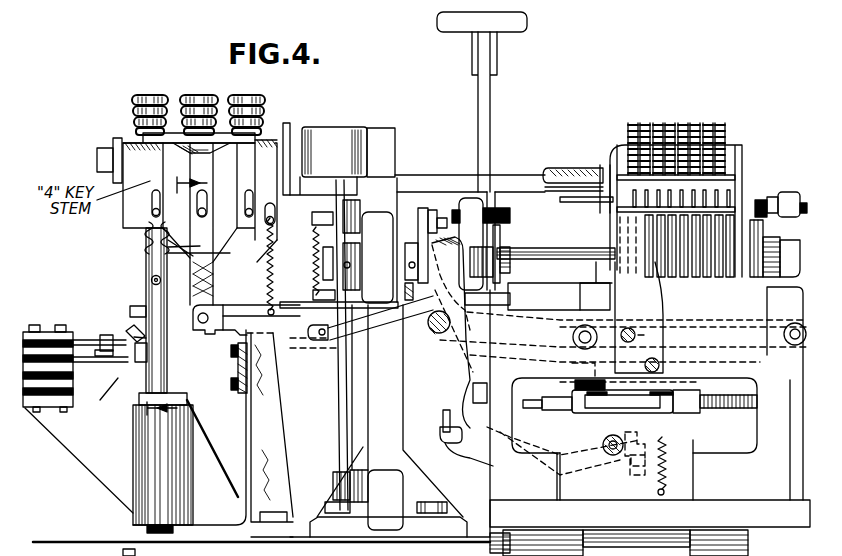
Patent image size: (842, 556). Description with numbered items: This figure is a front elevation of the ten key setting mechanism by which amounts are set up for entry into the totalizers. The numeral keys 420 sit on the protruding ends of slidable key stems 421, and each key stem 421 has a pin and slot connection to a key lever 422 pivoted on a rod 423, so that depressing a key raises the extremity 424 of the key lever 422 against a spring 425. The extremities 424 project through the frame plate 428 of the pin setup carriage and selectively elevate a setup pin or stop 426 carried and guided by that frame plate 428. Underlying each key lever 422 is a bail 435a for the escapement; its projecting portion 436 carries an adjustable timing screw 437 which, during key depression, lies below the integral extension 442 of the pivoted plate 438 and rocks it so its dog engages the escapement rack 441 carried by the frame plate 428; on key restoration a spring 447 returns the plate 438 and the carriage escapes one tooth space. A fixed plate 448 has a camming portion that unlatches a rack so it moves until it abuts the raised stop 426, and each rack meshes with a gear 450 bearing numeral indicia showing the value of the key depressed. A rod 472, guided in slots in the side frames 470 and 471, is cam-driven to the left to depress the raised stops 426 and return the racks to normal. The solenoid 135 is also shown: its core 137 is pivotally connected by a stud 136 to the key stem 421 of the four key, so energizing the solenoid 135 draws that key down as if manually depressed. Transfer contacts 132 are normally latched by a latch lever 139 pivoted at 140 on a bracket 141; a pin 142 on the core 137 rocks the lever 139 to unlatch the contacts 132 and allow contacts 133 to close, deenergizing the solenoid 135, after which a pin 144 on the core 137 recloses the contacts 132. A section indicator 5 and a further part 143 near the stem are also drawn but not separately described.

The numeral keys 420 is at (236, 98).
The section line 5 is at (175, 295).
The stud 136 is at (144, 229).
The screw 143 is at (146, 245).
The key stem 421 is at (230, 253).
The solenoid core 137 is at (143, 292).
The pin 142 is at (130, 311).
The transfer contacts 132 is at (127, 333).
The pivot 140 is at (150, 336).
The latch lever 139 is at (149, 321).
The key lever 422 is at (228, 322).
The contacts 133 is at (118, 352).
The pin 144 is at (135, 352).
The solenoid 135 is at (153, 452).
The bracket 141 is at (207, 453).
The spring 425 is at (266, 262).
The bail 435a is at (322, 342).
The rod 423 is at (437, 333).
The projecting portion 436 is at (470, 440).
The side frame 470 is at (468, 185).
The rod 472 is at (552, 238).
The fixed plate 448 is at (610, 265).
The gear 450 is at (720, 124).
The frame plate 428 is at (742, 166).
The side frame 471 is at (784, 196).
The extremity of key lever 424 is at (645, 338).
The setup pins or stops 426 is at (725, 318).
The plate 438 is at (602, 423).
The integral extension 442 is at (655, 440).
The screw 437 is at (660, 445).
The escapement rack 441 is at (747, 407).
The spring 447 is at (668, 468).